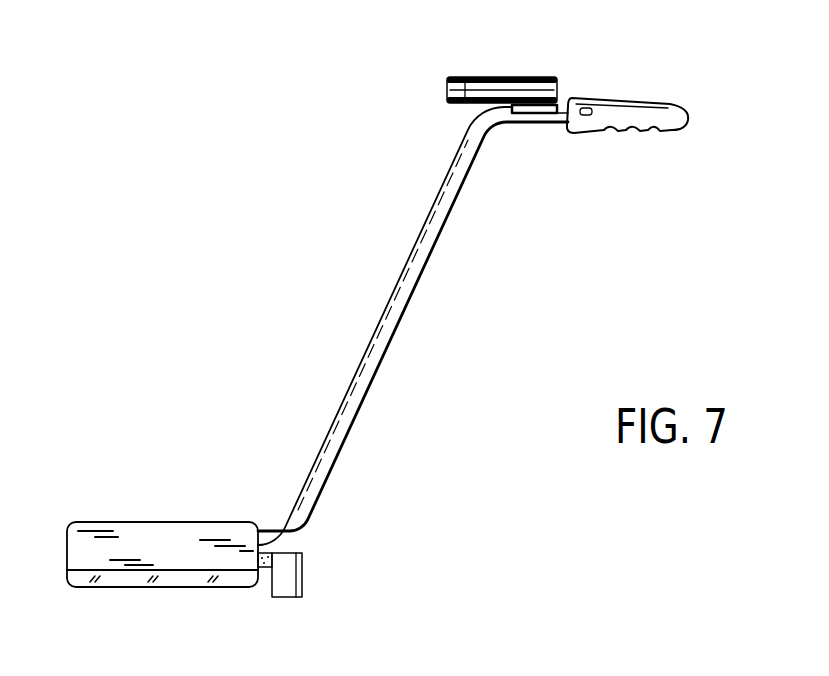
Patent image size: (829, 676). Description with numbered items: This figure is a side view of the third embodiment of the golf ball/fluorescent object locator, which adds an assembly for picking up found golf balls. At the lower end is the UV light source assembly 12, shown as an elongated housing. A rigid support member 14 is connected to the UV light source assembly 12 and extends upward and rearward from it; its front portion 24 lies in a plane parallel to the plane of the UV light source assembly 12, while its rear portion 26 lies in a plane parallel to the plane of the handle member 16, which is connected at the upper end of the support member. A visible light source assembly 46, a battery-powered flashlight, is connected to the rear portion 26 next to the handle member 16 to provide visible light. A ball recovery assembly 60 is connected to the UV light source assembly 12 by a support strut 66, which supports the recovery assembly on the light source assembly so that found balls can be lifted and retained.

The UV light source assembly 12 is at (145, 512).
The rigid support member 14 is at (373, 378).
The handle member 16 is at (650, 118).
The front portion 24 is at (263, 531).
The rear portion 26 is at (538, 123).
The visible light source assembly 46 is at (438, 68).
The ball recovery assembly 60 is at (322, 580).
The support strut 66 is at (272, 566).